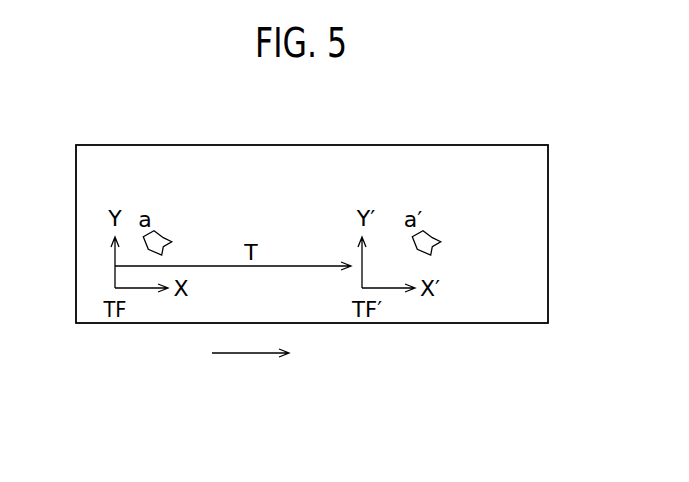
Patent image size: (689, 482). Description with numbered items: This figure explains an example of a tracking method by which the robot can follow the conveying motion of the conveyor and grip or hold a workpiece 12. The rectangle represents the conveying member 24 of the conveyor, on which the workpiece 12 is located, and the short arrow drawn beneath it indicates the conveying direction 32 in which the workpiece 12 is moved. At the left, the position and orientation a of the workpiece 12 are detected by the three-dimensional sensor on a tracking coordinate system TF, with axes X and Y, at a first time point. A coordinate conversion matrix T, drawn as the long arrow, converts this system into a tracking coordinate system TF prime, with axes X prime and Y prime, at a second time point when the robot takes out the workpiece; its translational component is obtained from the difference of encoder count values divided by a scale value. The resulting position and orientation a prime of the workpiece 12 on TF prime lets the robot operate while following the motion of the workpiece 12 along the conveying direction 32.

The workpiece 12 is at (162, 234).
The conveying member 24 is at (512, 323).
The conveying direction 32 is at (243, 354).